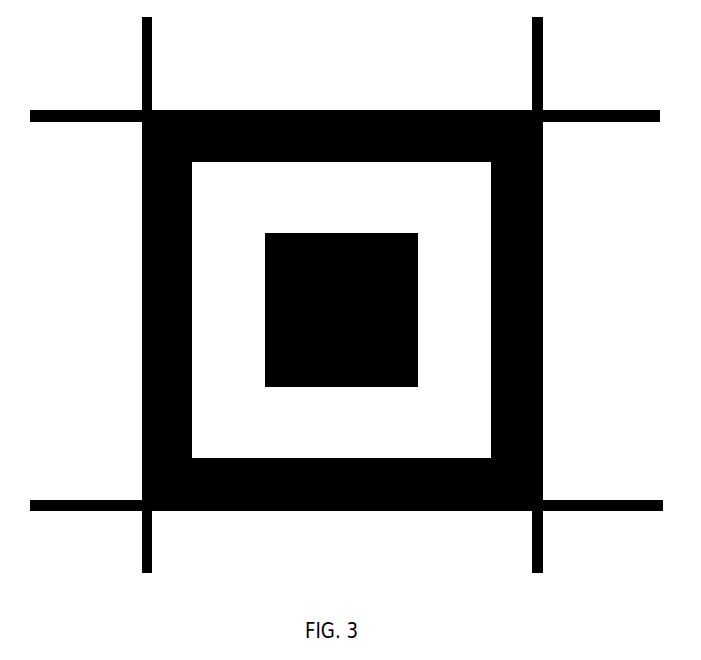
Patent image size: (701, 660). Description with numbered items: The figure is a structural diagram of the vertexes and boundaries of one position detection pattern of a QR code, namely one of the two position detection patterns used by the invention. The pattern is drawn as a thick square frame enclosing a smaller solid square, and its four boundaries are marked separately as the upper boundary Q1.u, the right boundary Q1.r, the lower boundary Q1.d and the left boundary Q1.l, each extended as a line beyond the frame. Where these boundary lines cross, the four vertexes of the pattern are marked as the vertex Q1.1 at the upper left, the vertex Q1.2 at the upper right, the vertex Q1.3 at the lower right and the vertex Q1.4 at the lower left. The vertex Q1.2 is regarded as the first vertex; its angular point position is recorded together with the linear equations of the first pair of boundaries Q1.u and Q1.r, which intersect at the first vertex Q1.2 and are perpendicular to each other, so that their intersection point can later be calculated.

The upper boundary of position detection pattern Q1 Q1.u is at (342, 111).
The lower boundary of position detection pattern Q1 Q1.d is at (342, 508).
The left boundary of position detection pattern Q1 Q1.l is at (126, 311).
The right boundary of position detection pattern Q1 Q1.r is at (562, 311).
The vertex of position detection pattern Q1 Q1.1 is at (111, 89).
The first vertex of position detection pattern Q1 Q1.2 is at (575, 89).
The vertex of position detection pattern Q1 Q1.3 is at (577, 515).
The vertex of position detection pattern Q1 Q1.4 is at (111, 515).